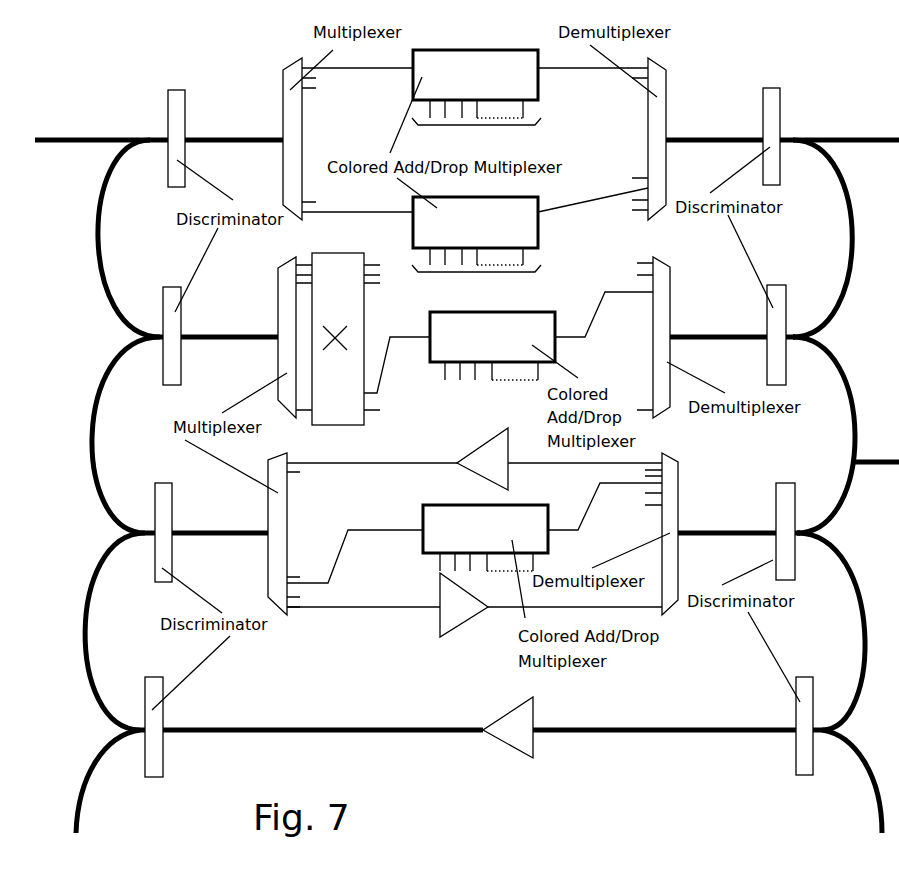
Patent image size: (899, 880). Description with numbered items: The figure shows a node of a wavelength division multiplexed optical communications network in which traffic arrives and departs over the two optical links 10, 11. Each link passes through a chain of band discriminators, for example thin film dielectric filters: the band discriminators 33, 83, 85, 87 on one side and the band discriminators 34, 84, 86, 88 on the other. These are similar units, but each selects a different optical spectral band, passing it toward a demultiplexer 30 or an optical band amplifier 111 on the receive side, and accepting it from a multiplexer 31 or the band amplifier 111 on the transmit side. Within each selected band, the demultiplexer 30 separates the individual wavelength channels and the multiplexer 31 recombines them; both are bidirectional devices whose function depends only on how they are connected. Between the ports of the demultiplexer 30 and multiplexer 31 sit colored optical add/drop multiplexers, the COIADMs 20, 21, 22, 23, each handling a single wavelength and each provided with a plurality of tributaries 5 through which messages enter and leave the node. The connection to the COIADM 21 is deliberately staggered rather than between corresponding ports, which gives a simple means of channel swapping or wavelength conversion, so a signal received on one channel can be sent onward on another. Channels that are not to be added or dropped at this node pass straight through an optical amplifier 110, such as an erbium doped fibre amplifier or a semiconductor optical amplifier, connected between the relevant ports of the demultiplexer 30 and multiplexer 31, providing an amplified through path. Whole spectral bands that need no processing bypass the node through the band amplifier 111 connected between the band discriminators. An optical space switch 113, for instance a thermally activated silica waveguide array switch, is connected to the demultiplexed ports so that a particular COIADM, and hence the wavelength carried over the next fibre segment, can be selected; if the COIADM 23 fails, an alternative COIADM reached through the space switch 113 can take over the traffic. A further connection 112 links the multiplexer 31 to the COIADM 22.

The optical link 10 is at (68, 137).
The optical link 11 is at (898, 130).
The band discriminator 33 is at (168, 90).
The band discriminator 34 is at (773, 88).
The band discriminator 83 is at (172, 287).
The band discriminator 84 is at (773, 285).
The band discriminator 85 is at (163, 483).
The band discriminator 86 is at (779, 497).
The band discriminator 87 is at (155, 677).
The band discriminator 88 is at (806, 677).
The optical multiplexer 31 is at (283, 92).
The optical demultiplexer 30 is at (667, 97).
The COIADM 20 is at (475, 75).
The COIADM 21 is at (475, 222).
The COIADM 22 is at (485, 538).
The COIADM 23 is at (492, 346).
The tributaries 5 is at (477, 125).
The optical amplifier 110 is at (483, 445).
The optical band amplifier 111 is at (517, 710).
The interconnecting fiber link 112 is at (423, 515).
The optical space switch 113 is at (364, 420).